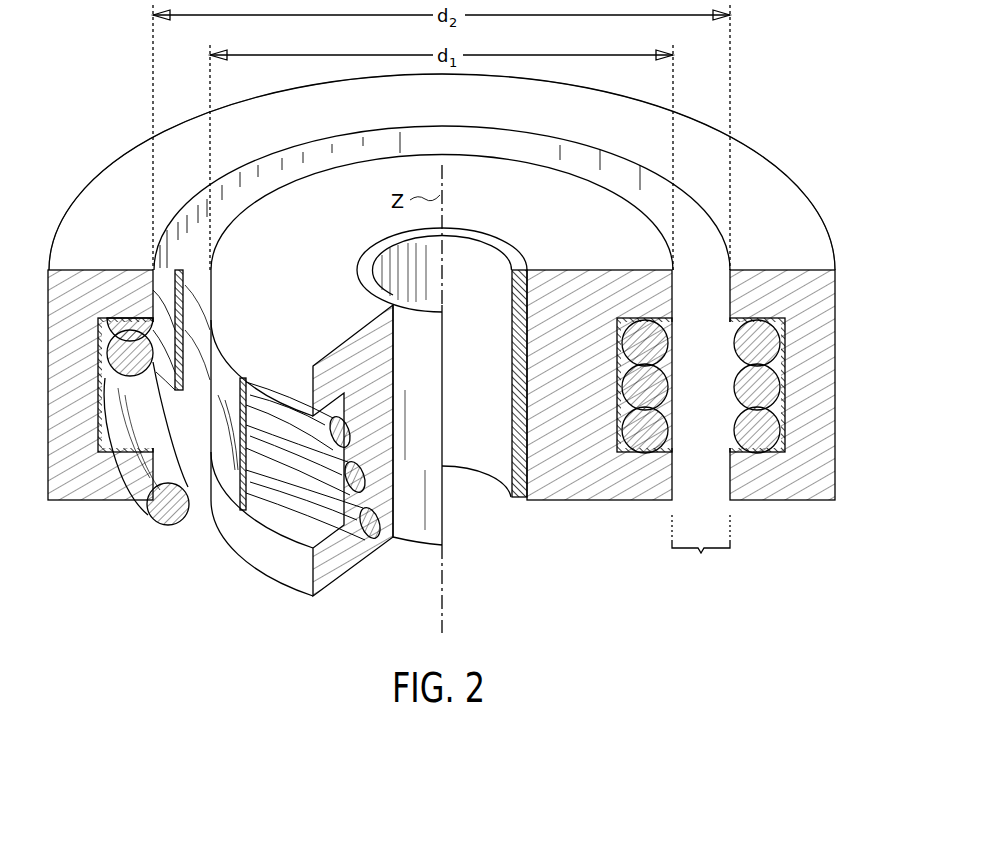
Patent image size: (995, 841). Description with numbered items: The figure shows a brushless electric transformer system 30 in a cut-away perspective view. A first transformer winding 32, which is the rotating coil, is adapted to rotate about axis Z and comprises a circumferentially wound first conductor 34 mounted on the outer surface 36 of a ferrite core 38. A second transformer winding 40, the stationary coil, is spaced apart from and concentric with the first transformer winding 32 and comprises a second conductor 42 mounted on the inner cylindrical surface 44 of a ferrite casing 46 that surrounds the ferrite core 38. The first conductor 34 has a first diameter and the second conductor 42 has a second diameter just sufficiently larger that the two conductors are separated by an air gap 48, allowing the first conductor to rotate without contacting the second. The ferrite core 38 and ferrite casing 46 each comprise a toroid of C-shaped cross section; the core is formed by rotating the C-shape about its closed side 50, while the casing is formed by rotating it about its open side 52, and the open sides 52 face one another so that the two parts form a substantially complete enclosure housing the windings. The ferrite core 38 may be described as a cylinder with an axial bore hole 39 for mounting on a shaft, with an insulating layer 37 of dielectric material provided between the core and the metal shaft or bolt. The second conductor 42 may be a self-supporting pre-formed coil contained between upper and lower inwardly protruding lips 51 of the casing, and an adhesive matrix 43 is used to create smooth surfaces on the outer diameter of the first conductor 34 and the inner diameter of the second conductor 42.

The brushless electric transformer system 30 is at (122, 118).
The first transformer winding 32 is at (617, 371).
The first conductor 34 is at (668, 427).
The outer surface 36 is at (665, 452).
The insulating layer 37 is at (498, 238).
The ferrite core 38 is at (587, 318).
The axial bore hole 39 is at (480, 512).
The second transformer winding 40 is at (786, 333).
The second conductor 42 is at (760, 440).
The adhesive matrix 43 is at (630, 318).
The inner cylindrical surface 44 is at (113, 383).
The ferrite casing 46 is at (776, 180).
The air gap 48 is at (701, 548).
The closed side 50 is at (530, 455).
The inwardly protruding lips 51 is at (741, 293).
The open side 52 is at (790, 437).